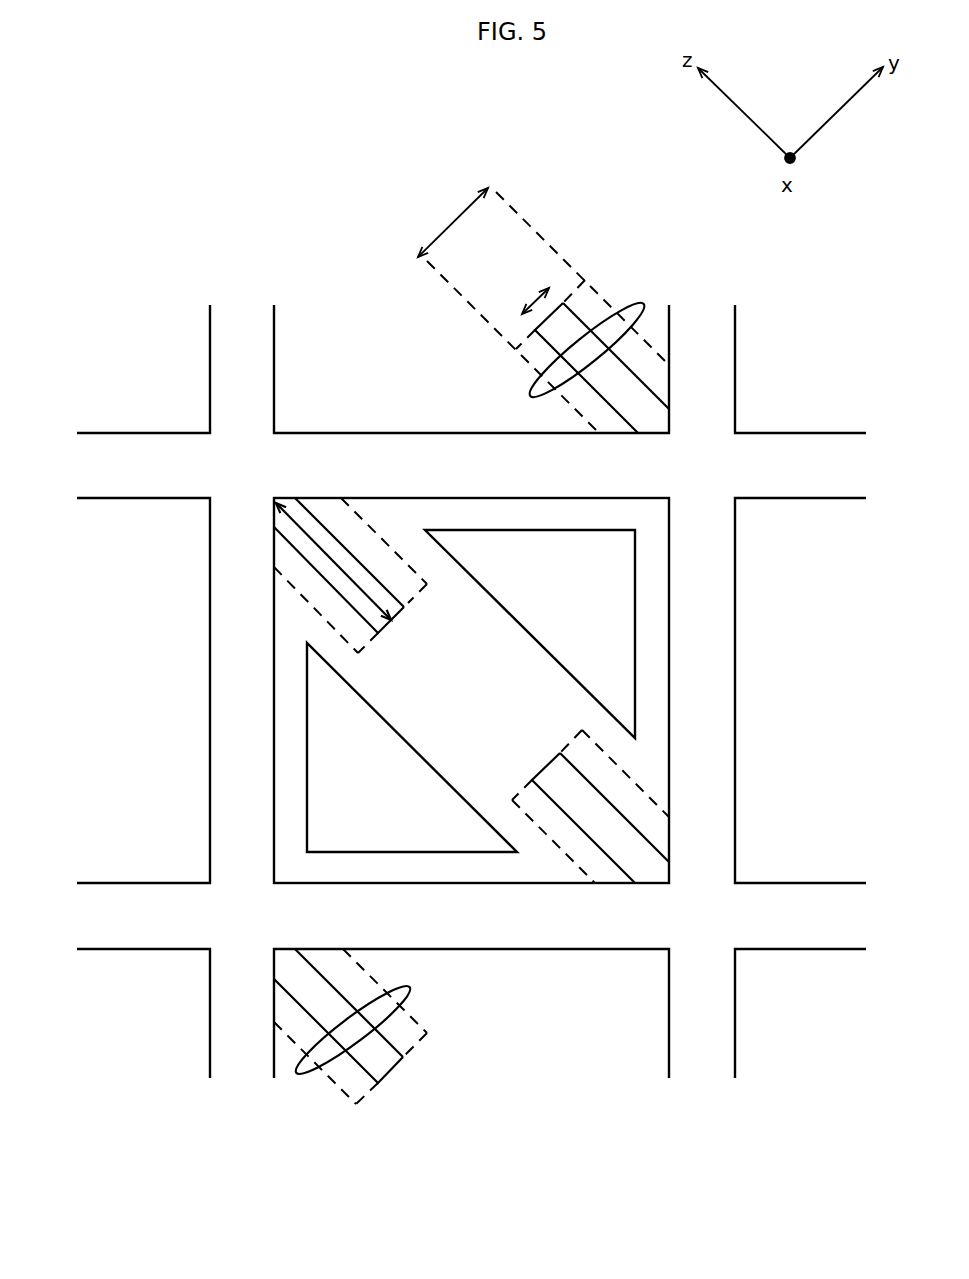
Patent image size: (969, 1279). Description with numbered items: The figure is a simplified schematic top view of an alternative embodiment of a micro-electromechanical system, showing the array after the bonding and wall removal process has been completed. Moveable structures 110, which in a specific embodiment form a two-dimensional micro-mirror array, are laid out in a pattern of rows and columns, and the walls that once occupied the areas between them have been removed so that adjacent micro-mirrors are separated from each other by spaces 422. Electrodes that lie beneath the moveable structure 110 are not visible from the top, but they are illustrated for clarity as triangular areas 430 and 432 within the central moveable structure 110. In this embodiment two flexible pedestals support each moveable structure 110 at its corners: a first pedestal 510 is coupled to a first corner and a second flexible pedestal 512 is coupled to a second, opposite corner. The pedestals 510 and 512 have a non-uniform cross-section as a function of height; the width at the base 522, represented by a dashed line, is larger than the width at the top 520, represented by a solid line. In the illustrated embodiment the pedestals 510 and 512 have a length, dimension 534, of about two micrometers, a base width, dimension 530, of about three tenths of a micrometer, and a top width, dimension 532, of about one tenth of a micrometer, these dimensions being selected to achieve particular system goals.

The moveable structure 110 is at (142, 382).
The spaces 422 is at (527, 477).
The triangular area 430 is at (407, 817).
The triangular area 432 is at (590, 576).
The first flexible pedestal 510 is at (634, 304).
The second flexible pedestal 512 is at (316, 1078).
The top of pedestal 520 is at (640, 875).
The base of pedestal 522 is at (567, 744).
The base width dimension 530 is at (522, 292).
The top width dimension 532 is at (447, 222).
The length dimension 534 is at (310, 532).